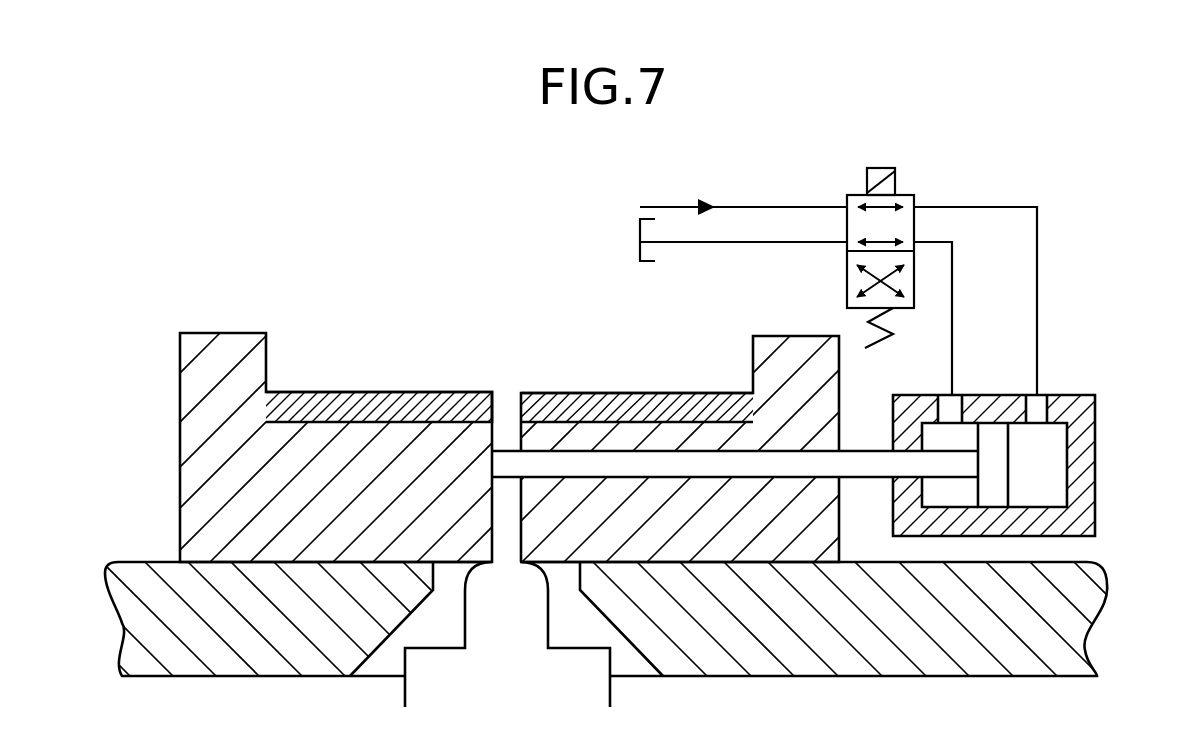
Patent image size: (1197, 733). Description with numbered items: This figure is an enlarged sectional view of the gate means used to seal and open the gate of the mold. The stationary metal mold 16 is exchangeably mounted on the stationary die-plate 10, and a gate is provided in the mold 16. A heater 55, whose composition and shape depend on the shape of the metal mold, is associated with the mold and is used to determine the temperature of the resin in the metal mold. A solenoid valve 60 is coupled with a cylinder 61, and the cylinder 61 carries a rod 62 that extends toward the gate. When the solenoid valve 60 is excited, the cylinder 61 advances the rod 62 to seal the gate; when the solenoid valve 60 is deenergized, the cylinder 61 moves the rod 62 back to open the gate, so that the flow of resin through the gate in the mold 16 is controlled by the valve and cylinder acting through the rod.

The stationary die-plate 10 is at (1107, 591).
The stationary metal mold 16 is at (198, 333).
The heater 55 is at (358, 392).
The solenoid valve 60 is at (917, 202).
The cylinder 61 is at (1097, 410).
The rod 62 is at (860, 481).